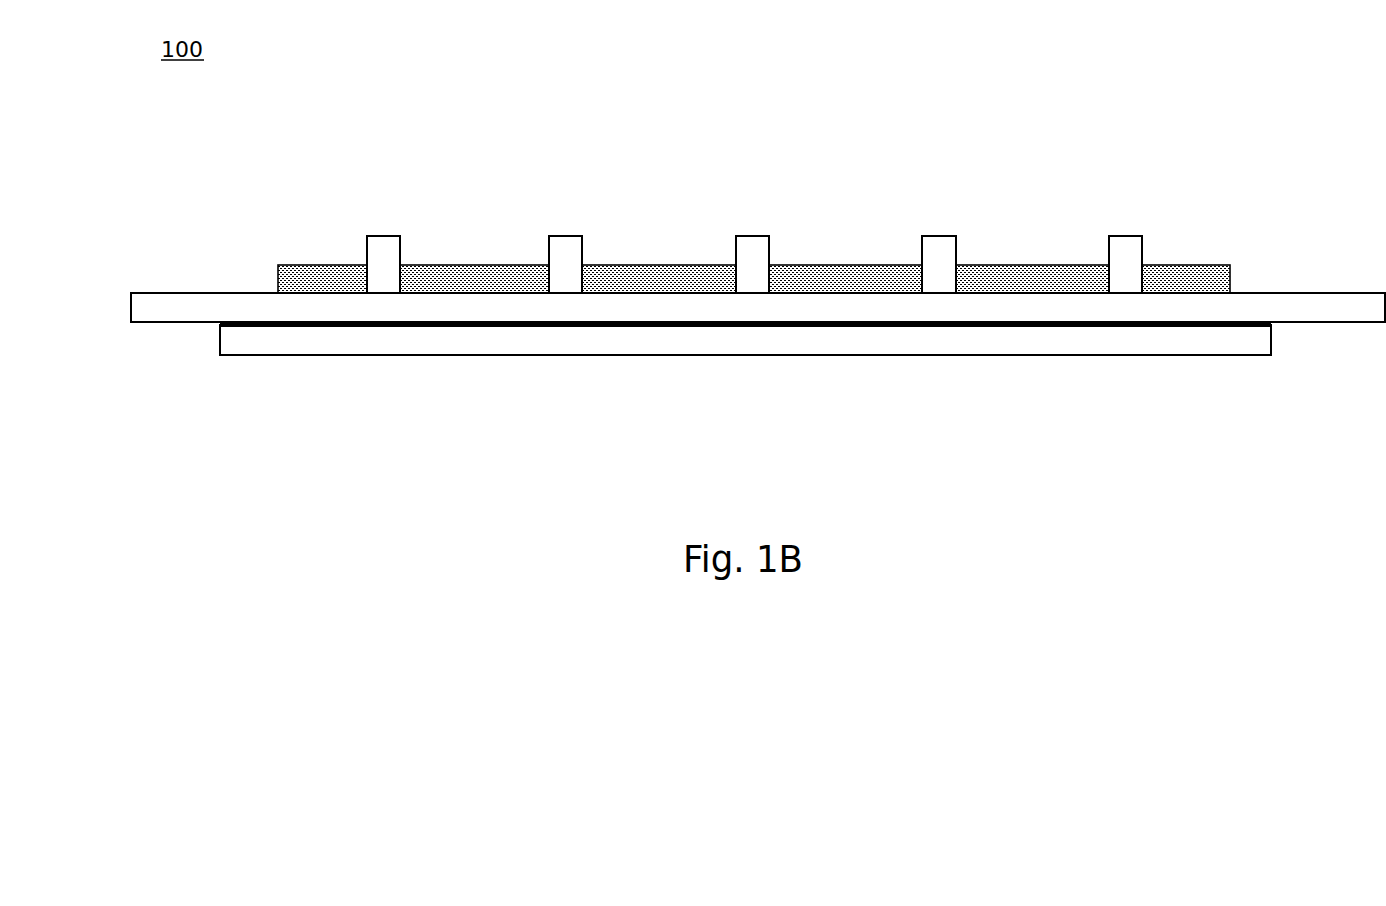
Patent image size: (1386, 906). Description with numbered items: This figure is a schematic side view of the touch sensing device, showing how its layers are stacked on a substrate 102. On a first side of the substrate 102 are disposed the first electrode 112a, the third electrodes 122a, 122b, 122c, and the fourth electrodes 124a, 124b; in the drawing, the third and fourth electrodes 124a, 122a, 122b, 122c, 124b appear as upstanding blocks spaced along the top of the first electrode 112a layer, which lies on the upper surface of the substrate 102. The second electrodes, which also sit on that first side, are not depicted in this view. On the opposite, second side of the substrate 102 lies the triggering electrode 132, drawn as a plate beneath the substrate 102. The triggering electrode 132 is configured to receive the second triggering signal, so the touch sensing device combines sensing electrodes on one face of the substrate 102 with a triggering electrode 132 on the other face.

The substrate 102 is at (128, 323).
The first electrode 112a is at (1208, 263).
The third electrode 122a is at (563, 236).
The third electrode 122b is at (750, 236).
The third electrode 122c is at (936, 236).
The fourth electrode 124a is at (381, 236).
The fourth electrode 124b is at (1123, 236).
The triggering electrode 132 is at (248, 357).